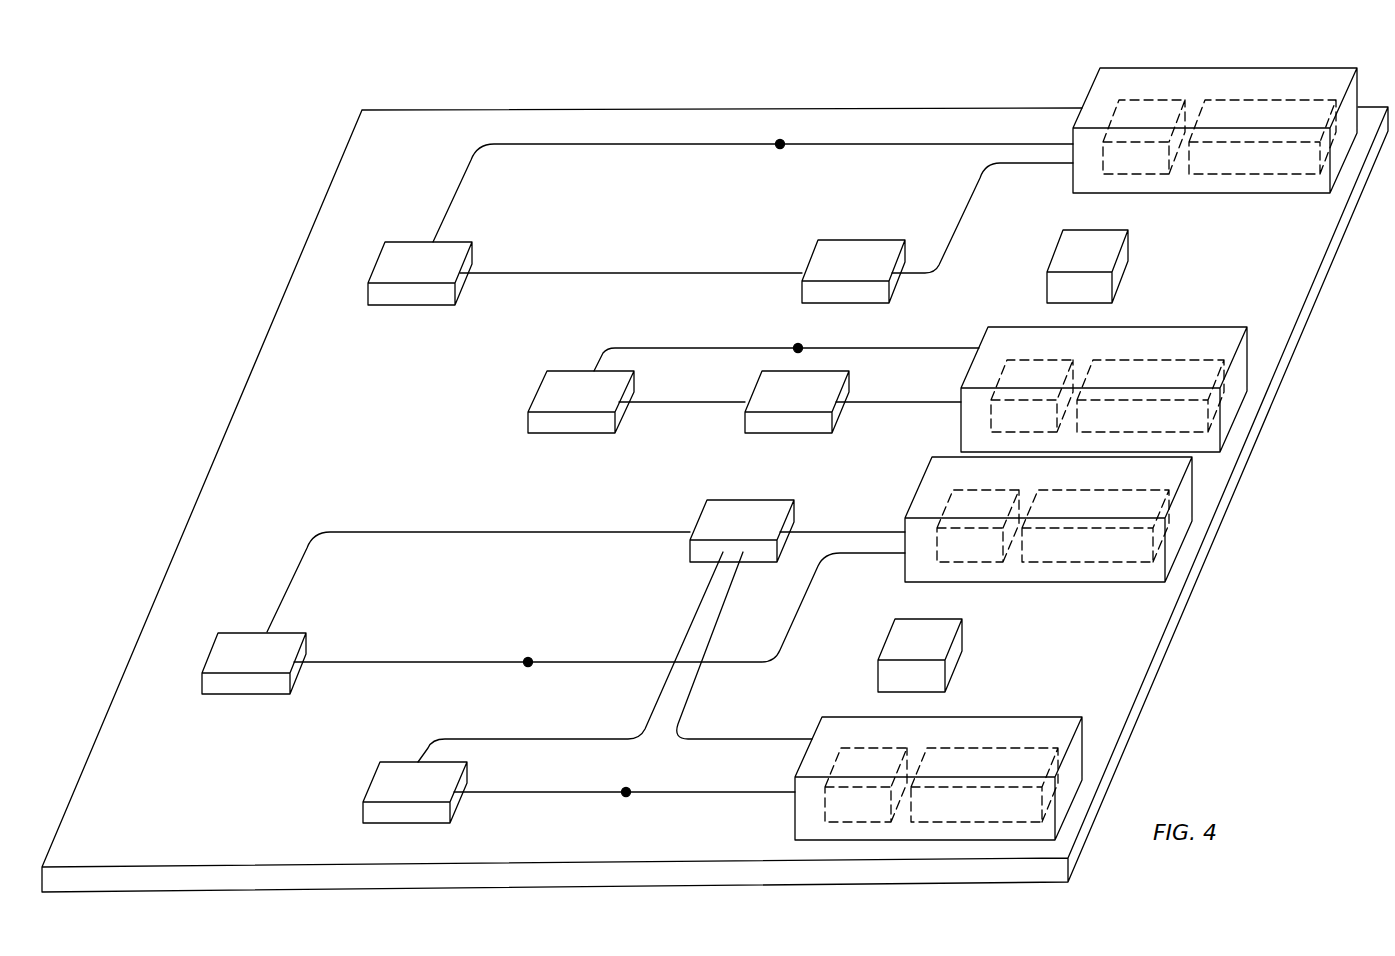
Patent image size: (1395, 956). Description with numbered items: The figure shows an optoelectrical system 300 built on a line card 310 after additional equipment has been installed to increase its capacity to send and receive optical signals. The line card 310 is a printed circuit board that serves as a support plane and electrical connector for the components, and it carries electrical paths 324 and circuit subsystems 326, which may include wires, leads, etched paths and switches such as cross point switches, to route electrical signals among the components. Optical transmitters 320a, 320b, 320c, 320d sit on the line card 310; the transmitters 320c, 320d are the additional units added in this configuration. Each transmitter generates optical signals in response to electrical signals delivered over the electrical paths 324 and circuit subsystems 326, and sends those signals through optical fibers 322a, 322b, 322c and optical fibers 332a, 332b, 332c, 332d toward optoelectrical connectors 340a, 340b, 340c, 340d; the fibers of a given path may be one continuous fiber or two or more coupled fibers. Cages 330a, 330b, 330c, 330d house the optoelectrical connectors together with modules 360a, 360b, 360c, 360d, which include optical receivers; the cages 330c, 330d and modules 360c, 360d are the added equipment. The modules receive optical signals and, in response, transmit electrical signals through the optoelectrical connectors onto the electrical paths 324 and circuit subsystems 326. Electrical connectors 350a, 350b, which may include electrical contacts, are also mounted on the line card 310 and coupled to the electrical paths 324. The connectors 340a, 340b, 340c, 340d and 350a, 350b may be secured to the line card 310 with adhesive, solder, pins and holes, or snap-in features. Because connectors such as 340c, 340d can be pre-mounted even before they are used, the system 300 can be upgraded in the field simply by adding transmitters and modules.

The optoelectrical system 300 is at (190, 302).
The line card 310 is at (540, 110).
The optical transmitter 320a is at (246, 694).
The optical transmitter 320b is at (412, 305).
The additional optical transmitter 320c is at (363, 812).
The additional optical transmitter 320d is at (576, 433).
The optical fiber 322a is at (416, 662).
The optical fiber 322b is at (652, 144).
The additional optical fiber 322c is at (553, 792).
The electrical path 324 is at (558, 273).
The circuit subsystem 326 is at (850, 240).
The cage 330a is at (1228, 68).
The cage 330b is at (1193, 490).
The additional cage 330c is at (1143, 327).
The additional cage 330d is at (978, 717).
The optical fiber 332a is at (924, 146).
The optical fiber 332b is at (792, 618).
The additional optical fiber 332c is at (948, 348).
The additional optical fiber 332d is at (730, 348).
The optoelectrical connector 340a is at (1150, 99).
The optoelectrical connector 340b is at (968, 562).
The optoelectrical connector 340c is at (1030, 358).
The optoelectrical connector 340d is at (865, 748).
The electrical connector 350a is at (962, 634).
The electrical connector 350b is at (1128, 246).
The module 360a is at (1302, 99).
The module 360b is at (1085, 562).
The additional module 360c is at (1203, 358).
The additional module 360d is at (1034, 748).